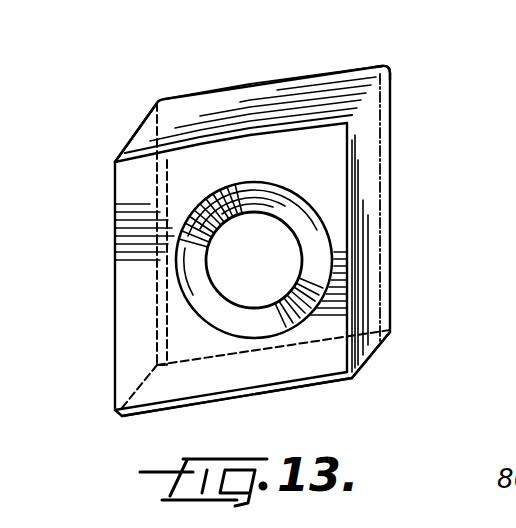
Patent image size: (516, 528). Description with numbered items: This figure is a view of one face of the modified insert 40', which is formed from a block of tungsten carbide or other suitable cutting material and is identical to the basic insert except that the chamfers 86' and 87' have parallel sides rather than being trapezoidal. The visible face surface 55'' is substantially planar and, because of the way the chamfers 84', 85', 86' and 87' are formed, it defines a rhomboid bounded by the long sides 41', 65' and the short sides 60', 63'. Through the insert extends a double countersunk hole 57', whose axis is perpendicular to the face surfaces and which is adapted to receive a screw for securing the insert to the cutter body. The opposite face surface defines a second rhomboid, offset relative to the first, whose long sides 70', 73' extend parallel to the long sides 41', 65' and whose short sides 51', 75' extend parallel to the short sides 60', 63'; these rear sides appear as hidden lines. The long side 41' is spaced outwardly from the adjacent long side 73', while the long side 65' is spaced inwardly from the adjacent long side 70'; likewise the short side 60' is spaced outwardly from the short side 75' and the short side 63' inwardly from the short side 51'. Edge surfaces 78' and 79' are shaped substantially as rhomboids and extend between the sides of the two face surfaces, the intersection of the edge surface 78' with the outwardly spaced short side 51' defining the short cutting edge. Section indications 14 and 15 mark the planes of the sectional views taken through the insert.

The modified insert 40' is at (303, 237).
The long side 41' is at (112, 225).
The short side 51' is at (266, 87).
The face surface 55'' is at (266, 241).
The double countersunk hole 57' is at (251, 255).
The short side 60' is at (358, 374).
The short side 63' is at (233, 143).
The long side 65' is at (409, 238).
The long side 70' is at (424, 208).
The long side 73' is at (196, 258).
The short side 75' is at (273, 390).
The edge surface 78' is at (327, 47).
The edge surface 79' is at (412, 277).
The chamfer 84' is at (154, 117).
The chamfer 85' is at (101, 255).
The chamfer 86' is at (216, 417).
The chamfer 87' is at (406, 42).
The section line 14- 14 is at (203, 62).
The section line 15- 15 is at (140, 277).